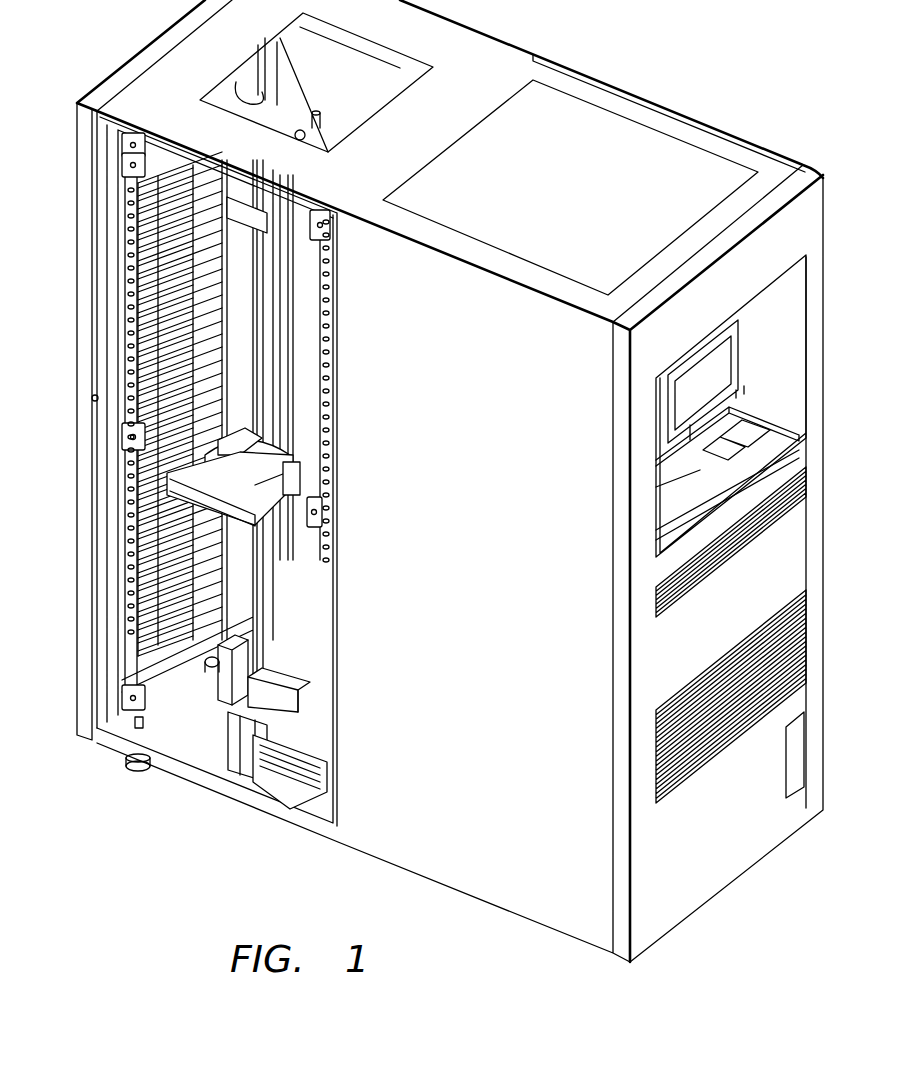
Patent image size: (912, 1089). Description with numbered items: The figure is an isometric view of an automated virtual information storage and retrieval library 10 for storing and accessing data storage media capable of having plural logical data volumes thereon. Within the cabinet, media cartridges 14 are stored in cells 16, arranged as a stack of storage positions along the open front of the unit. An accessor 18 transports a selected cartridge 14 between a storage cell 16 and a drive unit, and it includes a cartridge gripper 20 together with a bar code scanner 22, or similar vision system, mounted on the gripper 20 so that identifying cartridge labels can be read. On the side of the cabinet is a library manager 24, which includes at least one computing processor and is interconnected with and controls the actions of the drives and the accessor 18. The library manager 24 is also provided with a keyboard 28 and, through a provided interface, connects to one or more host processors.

The automated virtual information storage and retrieval library 10 is at (489, 55).
The media cartridges 14 is at (157, 253).
The cells 16 is at (86, 393).
The accessor 18 is at (233, 697).
The cartridge gripper 20 is at (303, 525).
The bar code scanner 22 is at (249, 448).
The library manager 24 is at (799, 350).
The keyboard 28 is at (776, 443).